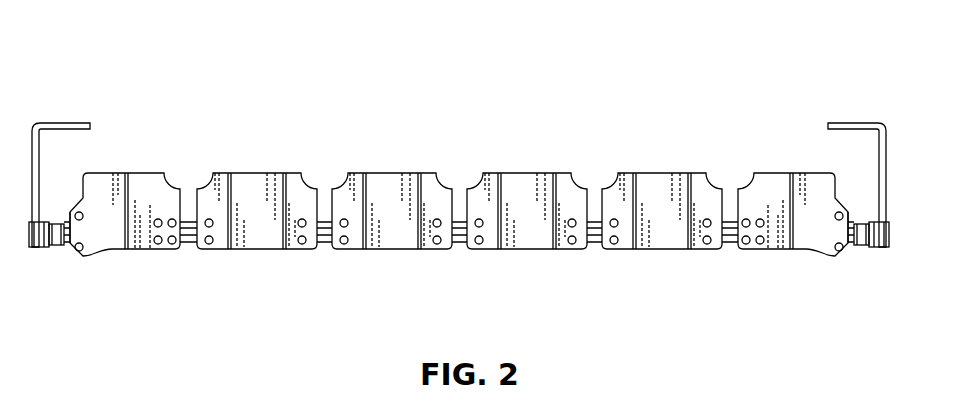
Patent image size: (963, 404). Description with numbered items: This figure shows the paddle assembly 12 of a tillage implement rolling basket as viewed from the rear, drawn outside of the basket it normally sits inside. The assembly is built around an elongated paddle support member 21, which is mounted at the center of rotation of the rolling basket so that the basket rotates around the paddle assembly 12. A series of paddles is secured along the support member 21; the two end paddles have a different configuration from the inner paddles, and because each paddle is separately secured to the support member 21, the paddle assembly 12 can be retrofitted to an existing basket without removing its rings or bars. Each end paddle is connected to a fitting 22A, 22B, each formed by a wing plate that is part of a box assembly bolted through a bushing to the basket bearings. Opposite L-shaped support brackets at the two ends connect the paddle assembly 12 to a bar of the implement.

The paddle assembly 12 is at (112, 47).
The elongated paddle support member 21 is at (323, 252).
The fitting 22A is at (61, 249).
The fitting 22B is at (853, 249).